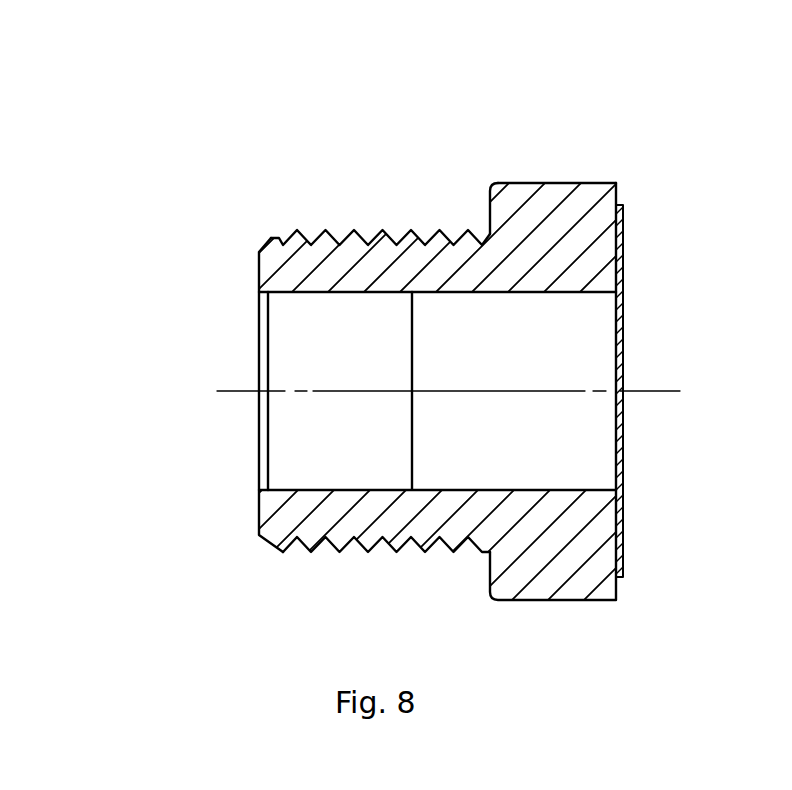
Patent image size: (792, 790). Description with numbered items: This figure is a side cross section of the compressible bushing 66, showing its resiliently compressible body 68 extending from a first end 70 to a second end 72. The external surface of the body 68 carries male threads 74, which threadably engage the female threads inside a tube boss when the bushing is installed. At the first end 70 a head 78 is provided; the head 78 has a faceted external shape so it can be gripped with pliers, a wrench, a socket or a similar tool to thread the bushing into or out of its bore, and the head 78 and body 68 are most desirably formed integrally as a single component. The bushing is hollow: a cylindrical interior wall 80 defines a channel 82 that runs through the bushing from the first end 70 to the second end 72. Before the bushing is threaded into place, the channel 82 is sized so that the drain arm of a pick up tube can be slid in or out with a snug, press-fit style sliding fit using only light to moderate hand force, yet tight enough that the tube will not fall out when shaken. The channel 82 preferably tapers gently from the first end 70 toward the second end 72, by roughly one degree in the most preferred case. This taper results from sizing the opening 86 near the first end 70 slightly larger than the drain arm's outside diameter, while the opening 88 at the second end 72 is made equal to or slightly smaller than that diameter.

The compressible bushing 66 is at (195, 100).
The resiliently compressible body 68 is at (412, 262).
The first end 70 is at (283, 272).
The second end 72 is at (583, 255).
The male threads 74 is at (352, 236).
The head 78 is at (585, 185).
The cylindrical interior wall 80 is at (550, 297).
The channel 82 is at (538, 429).
The opening 86 is at (283, 339).
The opening 88 is at (580, 443).